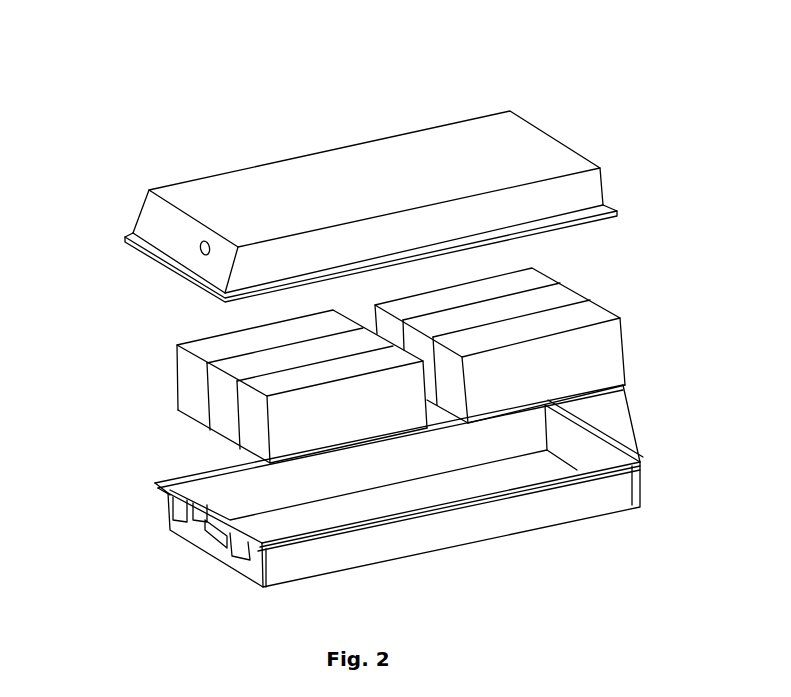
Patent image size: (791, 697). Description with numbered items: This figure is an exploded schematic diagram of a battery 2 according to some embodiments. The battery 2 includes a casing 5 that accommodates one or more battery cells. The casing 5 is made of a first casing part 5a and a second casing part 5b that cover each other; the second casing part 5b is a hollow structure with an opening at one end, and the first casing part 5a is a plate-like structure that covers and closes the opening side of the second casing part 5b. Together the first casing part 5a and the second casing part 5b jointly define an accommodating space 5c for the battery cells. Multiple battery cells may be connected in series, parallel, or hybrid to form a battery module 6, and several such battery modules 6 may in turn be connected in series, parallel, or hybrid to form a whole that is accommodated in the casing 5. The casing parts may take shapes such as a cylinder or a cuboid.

The battery 2 is at (368, 50).
The casing 5 is at (52, 338).
The first casing part 5a is at (170, 235).
The second casing part 5b is at (156, 500).
The accommodating space 5c is at (592, 432).
The battery module 6 is at (600, 352).